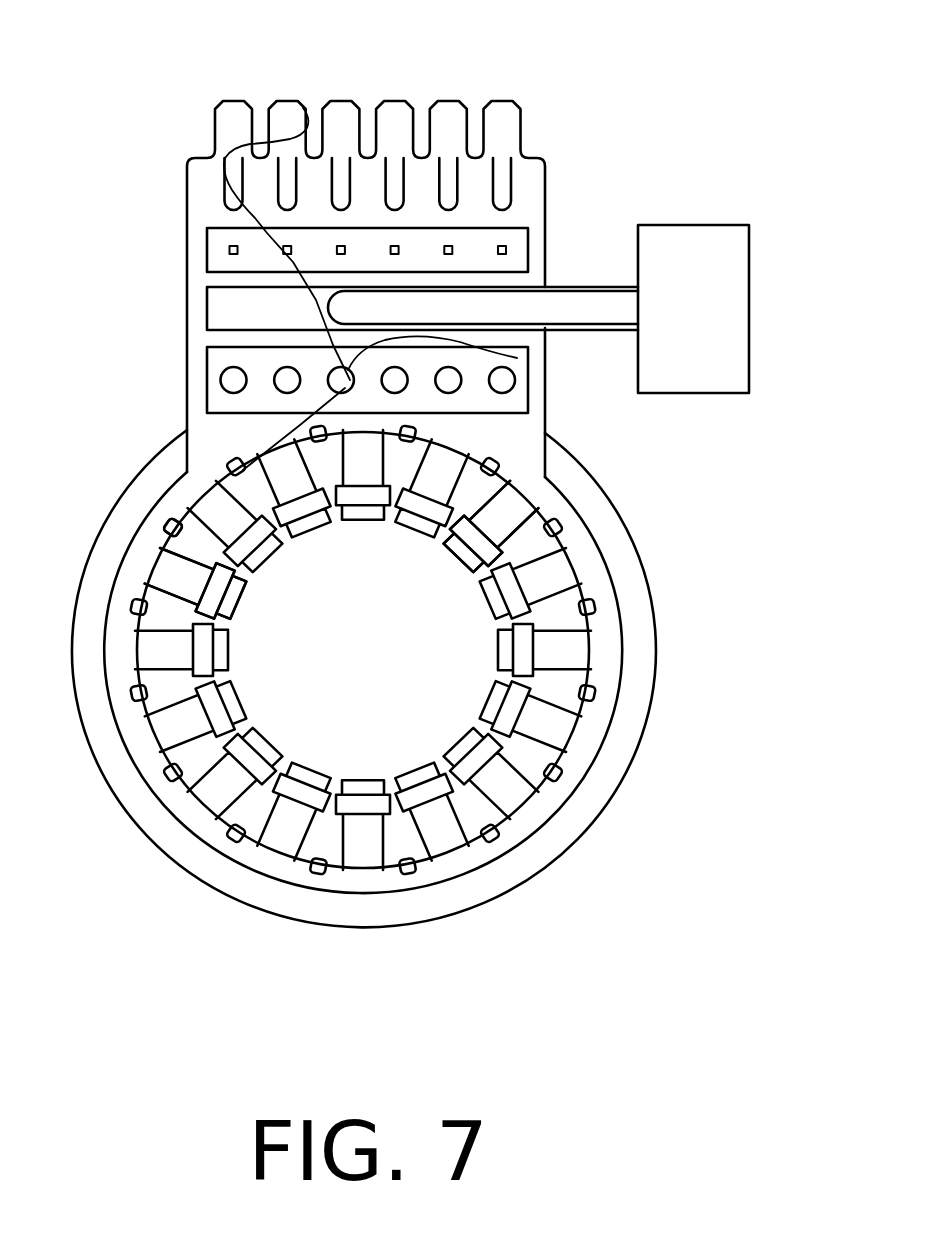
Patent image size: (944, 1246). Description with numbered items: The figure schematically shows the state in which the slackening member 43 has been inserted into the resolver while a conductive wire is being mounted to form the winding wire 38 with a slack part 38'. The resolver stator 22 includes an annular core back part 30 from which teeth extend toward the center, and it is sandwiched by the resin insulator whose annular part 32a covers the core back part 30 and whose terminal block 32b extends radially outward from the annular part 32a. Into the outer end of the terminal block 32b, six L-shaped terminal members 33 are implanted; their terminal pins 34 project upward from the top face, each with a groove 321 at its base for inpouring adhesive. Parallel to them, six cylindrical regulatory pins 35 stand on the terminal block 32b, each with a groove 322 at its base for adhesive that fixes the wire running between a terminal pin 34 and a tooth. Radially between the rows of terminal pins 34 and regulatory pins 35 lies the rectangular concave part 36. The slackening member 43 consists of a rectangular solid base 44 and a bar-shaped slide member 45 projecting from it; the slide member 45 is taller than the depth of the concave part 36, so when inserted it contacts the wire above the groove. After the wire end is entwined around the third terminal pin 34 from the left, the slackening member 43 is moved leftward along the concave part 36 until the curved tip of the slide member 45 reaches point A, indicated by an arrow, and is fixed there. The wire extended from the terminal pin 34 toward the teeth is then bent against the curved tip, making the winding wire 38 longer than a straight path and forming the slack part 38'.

The resolver stator 22 is at (579, 893).
The core back part 30 is at (333, 662).
The annular part 32a is at (608, 558).
The terminal block 32b is at (546, 152).
The terminal members 33 is at (503, 97).
The terminal pins 34 is at (226, 247).
The regulatory pins 35 is at (503, 381).
The concave part 36 is at (206, 293).
The winding wire 38 is at (475, 355).
The slack part 38' is at (272, 236).
The groove 321 is at (519, 230).
The groove 322 is at (228, 413).
The slackening member 43 is at (675, 183).
The base 44 is at (713, 226).
The slide member 45 is at (589, 287).
The point A is at (357, 284).